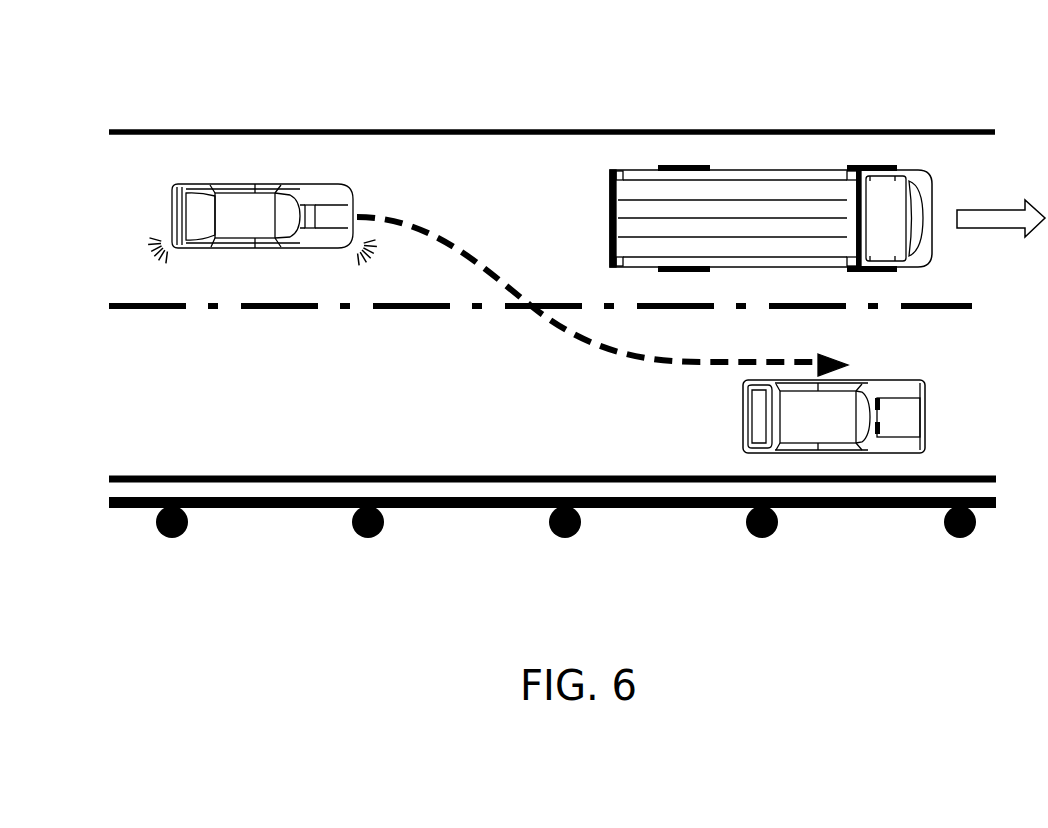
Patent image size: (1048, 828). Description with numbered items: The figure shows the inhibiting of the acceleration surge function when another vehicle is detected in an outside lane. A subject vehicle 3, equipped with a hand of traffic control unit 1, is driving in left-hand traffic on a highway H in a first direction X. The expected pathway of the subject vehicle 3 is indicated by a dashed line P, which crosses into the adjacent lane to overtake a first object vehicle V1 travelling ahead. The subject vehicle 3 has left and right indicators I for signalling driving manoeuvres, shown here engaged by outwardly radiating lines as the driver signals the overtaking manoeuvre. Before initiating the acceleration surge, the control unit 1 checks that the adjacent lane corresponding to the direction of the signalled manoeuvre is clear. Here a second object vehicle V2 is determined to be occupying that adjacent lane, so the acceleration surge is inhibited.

The hand of traffic control unit 1 is at (293, 144).
The subject vehicle 3 is at (242, 210).
The indicators I is at (330, 263).
The expected pathway P is at (572, 335).
The highway H is at (296, 459).
The first object vehicle V1 is at (903, 236).
The second object vehicle V2 is at (912, 413).
The first direction X is at (1001, 207).